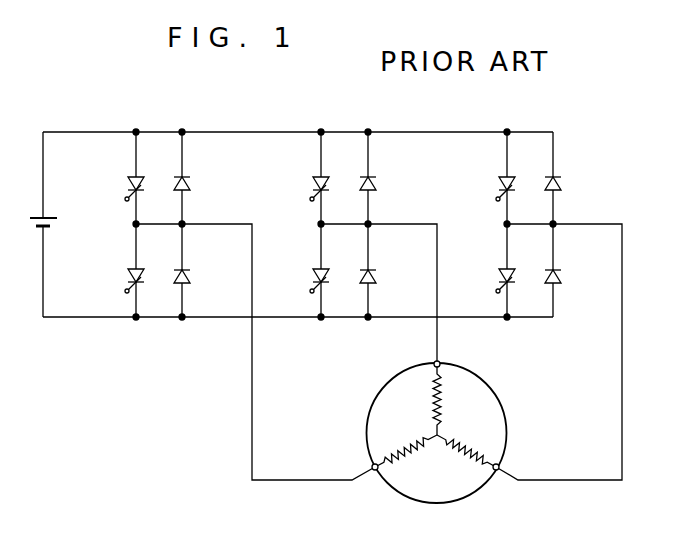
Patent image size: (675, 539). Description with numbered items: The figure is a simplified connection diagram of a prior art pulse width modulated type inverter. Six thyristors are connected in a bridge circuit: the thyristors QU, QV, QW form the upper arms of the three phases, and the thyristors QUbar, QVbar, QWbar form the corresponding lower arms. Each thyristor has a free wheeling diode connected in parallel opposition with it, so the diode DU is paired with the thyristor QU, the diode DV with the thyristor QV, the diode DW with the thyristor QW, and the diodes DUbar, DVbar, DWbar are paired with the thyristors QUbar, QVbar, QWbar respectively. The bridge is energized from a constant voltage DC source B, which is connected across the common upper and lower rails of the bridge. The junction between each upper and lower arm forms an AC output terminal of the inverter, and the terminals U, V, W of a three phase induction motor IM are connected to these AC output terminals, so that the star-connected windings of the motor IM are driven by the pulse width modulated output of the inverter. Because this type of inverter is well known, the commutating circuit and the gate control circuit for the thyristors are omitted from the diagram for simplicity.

The constant voltage DC source B is at (51, 226).
The thyristor QU is at (128, 178).
The free wheeling diode DU is at (190, 180).
The thyristor QUbar is at (128, 270).
The free wheeling diode DUbar is at (224, 289).
The thyristor QV is at (295, 178).
The free wheeling diode DV is at (376, 180).
The thyristor QVbar is at (313, 270).
The free wheeling diode DVbar is at (409, 289).
The thyristor QW is at (499, 178).
The free wheeling diode DW is at (561, 180).
The thyristor QWbar is at (499, 270).
The free wheeling diode DWbar is at (595, 289).
The three phase induction motor IM is at (503, 412).
The terminal U is at (360, 465).
The terminal V is at (446, 355).
The terminal W is at (509, 465).